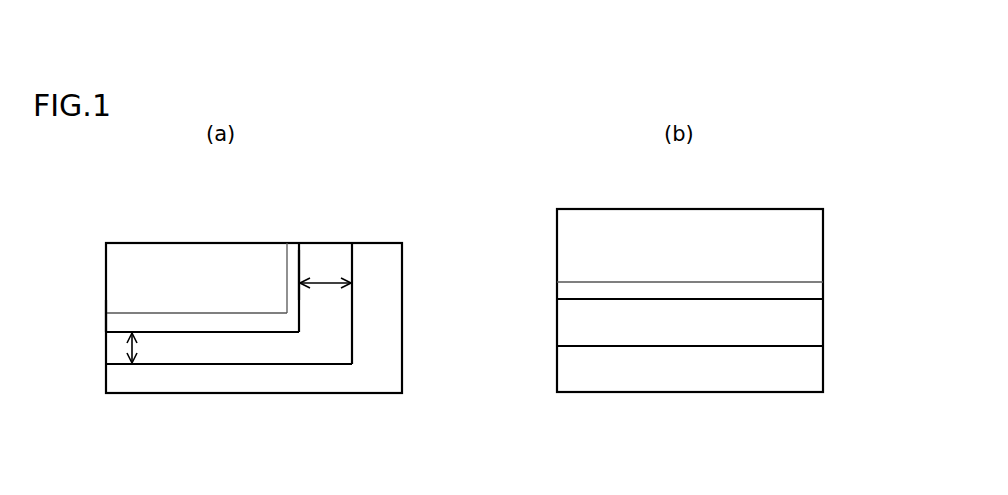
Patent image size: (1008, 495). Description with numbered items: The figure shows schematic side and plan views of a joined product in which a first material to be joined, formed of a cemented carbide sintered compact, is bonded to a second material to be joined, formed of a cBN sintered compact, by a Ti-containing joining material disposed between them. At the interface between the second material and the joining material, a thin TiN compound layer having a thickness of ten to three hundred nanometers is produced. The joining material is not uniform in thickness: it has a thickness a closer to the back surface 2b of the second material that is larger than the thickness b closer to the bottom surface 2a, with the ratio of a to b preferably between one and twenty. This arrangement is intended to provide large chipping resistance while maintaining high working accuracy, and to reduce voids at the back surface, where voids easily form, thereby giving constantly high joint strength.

The bottom surface 2a is at (160, 331).
The back surface 2b is at (291, 264).
The thickness closer to back surface a is at (328, 280).
The thickness closer to bottom surface b is at (128, 348).